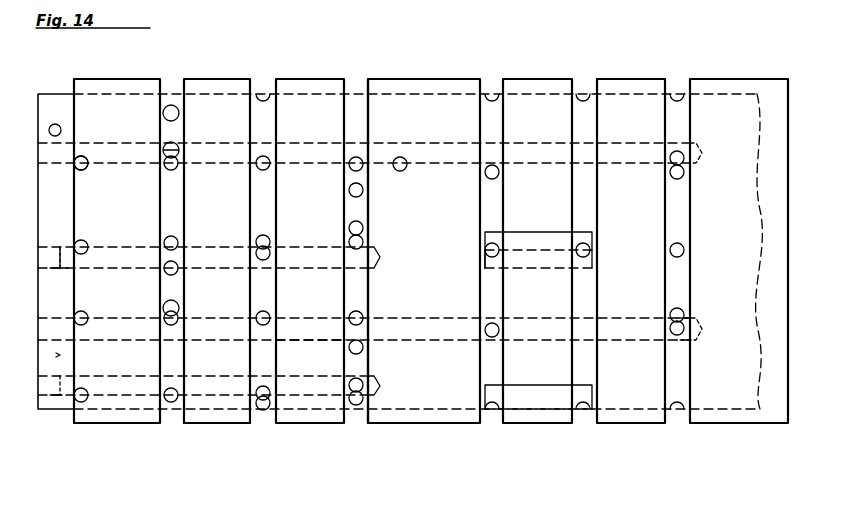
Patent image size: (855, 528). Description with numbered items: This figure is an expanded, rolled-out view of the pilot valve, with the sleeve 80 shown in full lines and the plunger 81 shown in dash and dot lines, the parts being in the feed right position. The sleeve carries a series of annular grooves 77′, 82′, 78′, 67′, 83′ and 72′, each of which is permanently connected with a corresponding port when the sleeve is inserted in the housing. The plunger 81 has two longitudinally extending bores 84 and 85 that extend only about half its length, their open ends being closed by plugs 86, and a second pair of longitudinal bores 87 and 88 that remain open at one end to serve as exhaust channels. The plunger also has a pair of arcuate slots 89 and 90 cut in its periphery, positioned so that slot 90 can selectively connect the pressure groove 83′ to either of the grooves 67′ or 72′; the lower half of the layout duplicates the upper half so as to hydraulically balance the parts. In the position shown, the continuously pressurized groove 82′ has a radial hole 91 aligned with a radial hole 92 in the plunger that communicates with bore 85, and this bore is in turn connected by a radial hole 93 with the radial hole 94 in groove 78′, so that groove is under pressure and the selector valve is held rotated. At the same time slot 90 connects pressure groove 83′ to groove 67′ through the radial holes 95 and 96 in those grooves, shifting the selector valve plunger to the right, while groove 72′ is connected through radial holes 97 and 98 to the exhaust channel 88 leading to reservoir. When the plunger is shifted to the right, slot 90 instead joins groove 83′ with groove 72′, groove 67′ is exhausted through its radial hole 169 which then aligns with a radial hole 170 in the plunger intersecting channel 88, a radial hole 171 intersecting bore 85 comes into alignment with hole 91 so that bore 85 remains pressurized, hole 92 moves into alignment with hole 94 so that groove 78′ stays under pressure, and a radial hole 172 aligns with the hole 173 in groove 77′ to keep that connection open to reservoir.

The plunger 81 is at (50, 96).
The annular groove 77′ is at (171, 90).
The annular groove 82′ is at (262, 90).
The sleeve 80 is at (307, 78).
The annular groove 78′ is at (357, 90).
The annular groove 67′ is at (490, 92).
The pressure groove 83′ is at (580, 92).
The annular groove 72′ is at (677, 92).
The radial hole 173 is at (178, 147).
The radial hole 172 is at (82, 168).
The radial hole 171 is at (178, 243).
The plugs 86 is at (52, 262).
The longitudinally extending bore 84 is at (213, 405).
The radial hole 92 is at (268, 238).
The longitudinal bore 85 is at (322, 232).
The radial hole 91 is at (270, 260).
The longitudinally extending bore 87 is at (296, 340).
The radial hole 94 is at (361, 225).
The radial hole 93 is at (365, 243).
The radial hole 170 is at (400, 157).
The longitudinal channel 88 is at (424, 178).
The radial hole 169 is at (499, 176).
The arcuate shaped slot 90 is at (527, 262).
The radial hole 96 is at (485, 268).
The radial hole 95 is at (590, 256).
The radial hole 98 is at (682, 155).
The radial hole 97 is at (685, 176).
The arcuate shaped slot 89 is at (538, 410).